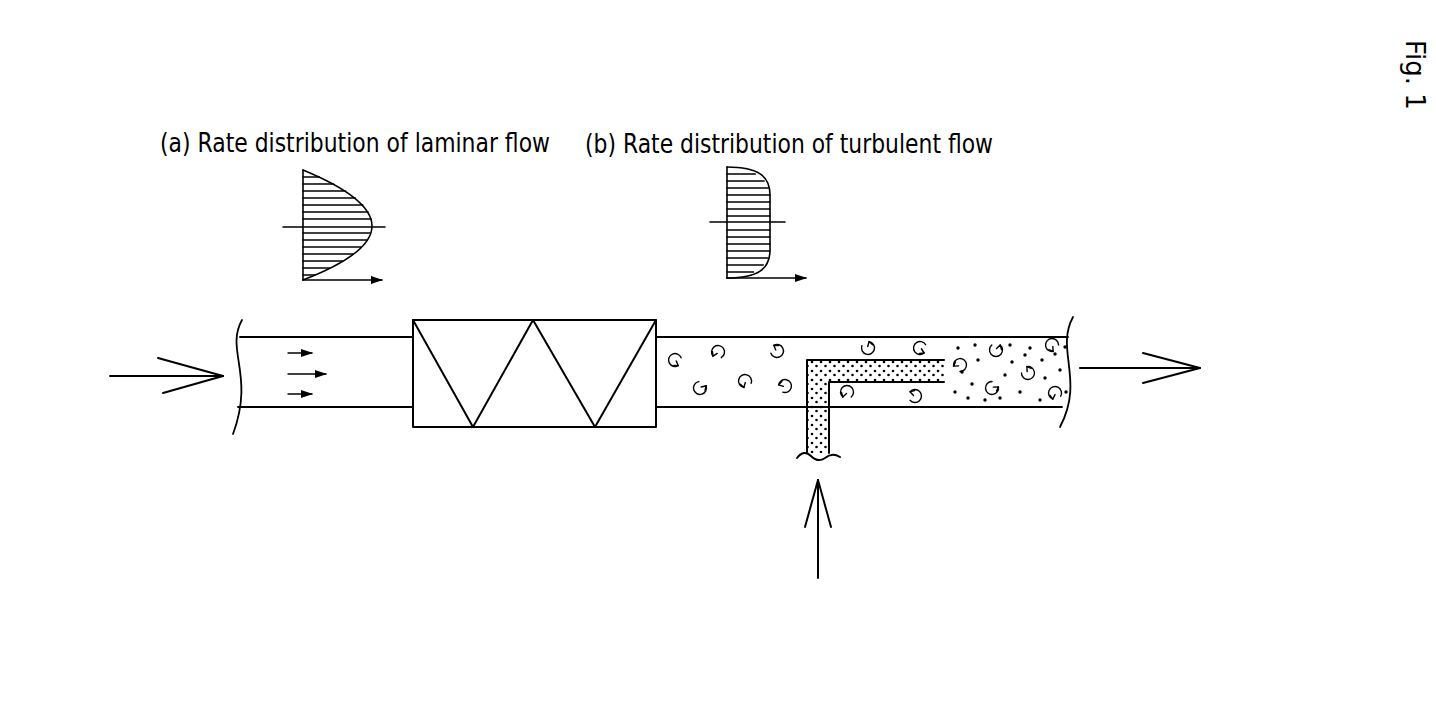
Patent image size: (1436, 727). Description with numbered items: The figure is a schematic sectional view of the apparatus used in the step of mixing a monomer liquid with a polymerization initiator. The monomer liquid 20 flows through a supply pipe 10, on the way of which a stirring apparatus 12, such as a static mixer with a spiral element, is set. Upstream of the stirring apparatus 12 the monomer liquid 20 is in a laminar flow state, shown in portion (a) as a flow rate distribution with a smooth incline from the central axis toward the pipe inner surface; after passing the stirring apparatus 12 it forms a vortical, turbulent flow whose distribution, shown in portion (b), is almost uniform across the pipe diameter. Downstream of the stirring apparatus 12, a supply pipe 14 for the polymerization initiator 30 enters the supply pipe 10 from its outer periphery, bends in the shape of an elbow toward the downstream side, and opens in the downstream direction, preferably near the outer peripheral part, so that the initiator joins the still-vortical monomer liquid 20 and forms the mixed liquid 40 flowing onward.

The supply pipe 10 is at (394, 400).
The stirring apparatus 12 is at (448, 335).
The supply pipe 14 is at (880, 385).
The monomer liquid 20 is at (140, 376).
The polymerization initiator 30 is at (818, 545).
The mixed liquid 40 is at (1113, 368).